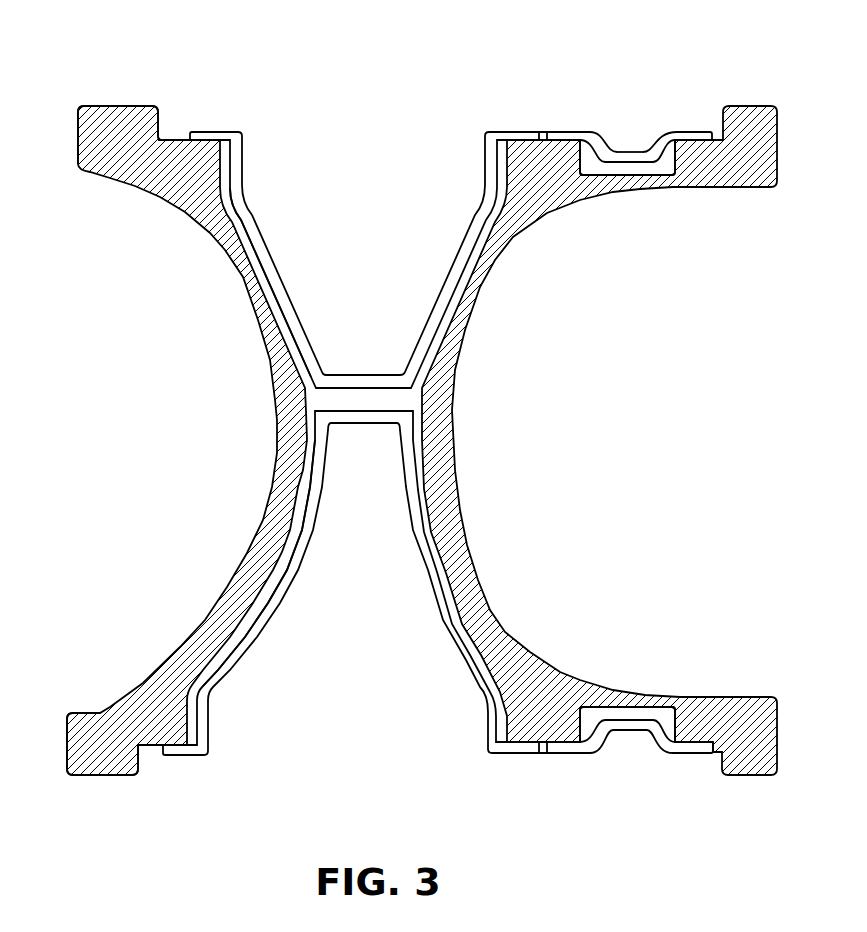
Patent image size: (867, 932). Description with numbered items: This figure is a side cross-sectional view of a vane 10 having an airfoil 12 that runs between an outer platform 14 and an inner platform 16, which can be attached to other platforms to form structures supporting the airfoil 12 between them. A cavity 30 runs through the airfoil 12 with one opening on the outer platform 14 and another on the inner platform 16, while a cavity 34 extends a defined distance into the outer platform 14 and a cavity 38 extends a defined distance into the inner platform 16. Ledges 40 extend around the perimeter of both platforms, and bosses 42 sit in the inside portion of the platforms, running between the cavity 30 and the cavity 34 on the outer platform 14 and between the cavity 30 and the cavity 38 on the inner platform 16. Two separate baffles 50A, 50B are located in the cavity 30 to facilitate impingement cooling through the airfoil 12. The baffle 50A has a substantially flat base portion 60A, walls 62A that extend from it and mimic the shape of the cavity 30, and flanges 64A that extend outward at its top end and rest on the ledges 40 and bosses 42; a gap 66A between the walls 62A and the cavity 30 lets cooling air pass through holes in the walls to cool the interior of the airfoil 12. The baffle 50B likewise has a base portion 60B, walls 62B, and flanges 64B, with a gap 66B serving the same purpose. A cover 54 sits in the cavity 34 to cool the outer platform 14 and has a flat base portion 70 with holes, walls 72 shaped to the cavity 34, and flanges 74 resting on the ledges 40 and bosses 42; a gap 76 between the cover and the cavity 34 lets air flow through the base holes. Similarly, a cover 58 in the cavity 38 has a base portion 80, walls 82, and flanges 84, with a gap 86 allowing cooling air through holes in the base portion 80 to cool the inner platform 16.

The vane 10 is at (180, 339).
The airfoil 12 is at (437, 437).
The outer platform 14 is at (88, 118).
The inner platform 16 is at (85, 743).
The cavity 30 is at (352, 252).
The cavity 34 is at (632, 195).
The cavity 38 is at (634, 684).
The ledges 40 is at (177, 126).
The bosses 42 is at (541, 120).
The baffle 50A is at (254, 217).
The baffle 50B is at (282, 603).
The cover 54 is at (607, 159).
The cover 58 is at (667, 706).
The base portion 60A is at (362, 361).
The base portion 60B is at (362, 437).
The walls 62A is at (437, 243).
The walls 62B is at (422, 617).
The flanges 64A is at (212, 118).
The flanges 64B is at (186, 770).
The gap 66A is at (268, 257).
The gap 66B is at (297, 538).
The base portion 70 is at (618, 129).
The walls 72 is at (637, 122).
The flanges 74 is at (686, 112).
The gap 76 is at (660, 168).
The base portion 80 is at (639, 747).
The walls 82 is at (612, 750).
The flanges 84 is at (572, 769).
The gap 86 is at (598, 716).